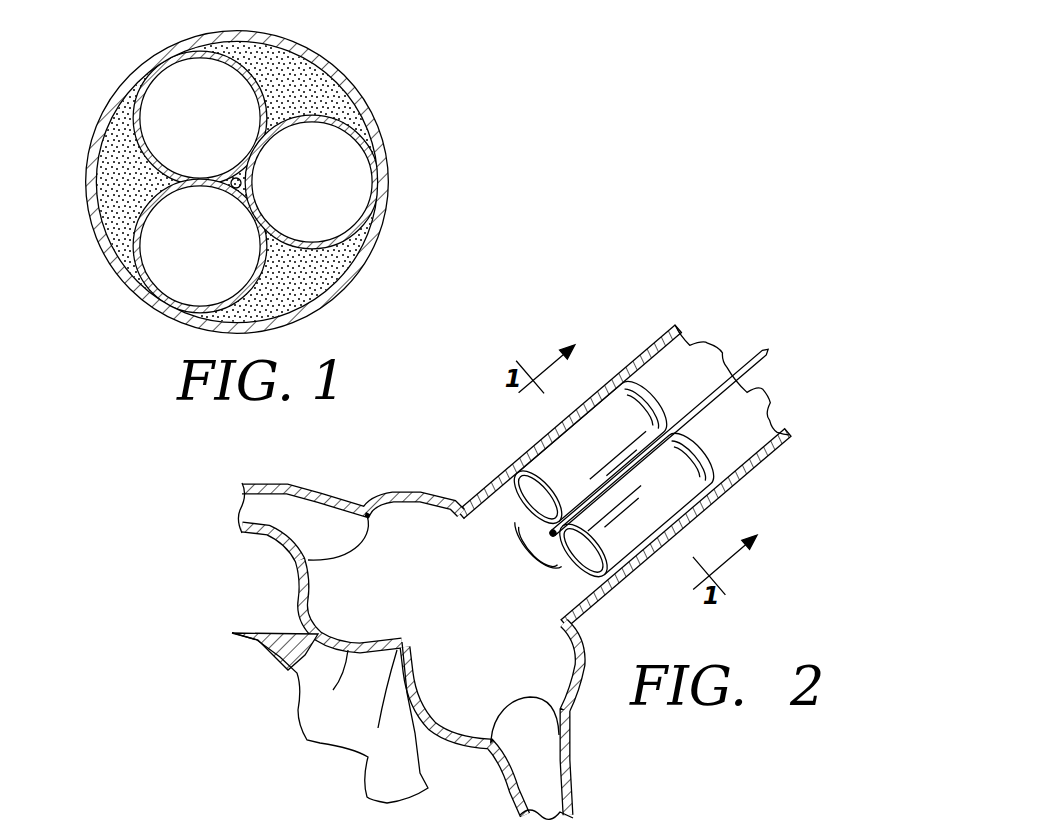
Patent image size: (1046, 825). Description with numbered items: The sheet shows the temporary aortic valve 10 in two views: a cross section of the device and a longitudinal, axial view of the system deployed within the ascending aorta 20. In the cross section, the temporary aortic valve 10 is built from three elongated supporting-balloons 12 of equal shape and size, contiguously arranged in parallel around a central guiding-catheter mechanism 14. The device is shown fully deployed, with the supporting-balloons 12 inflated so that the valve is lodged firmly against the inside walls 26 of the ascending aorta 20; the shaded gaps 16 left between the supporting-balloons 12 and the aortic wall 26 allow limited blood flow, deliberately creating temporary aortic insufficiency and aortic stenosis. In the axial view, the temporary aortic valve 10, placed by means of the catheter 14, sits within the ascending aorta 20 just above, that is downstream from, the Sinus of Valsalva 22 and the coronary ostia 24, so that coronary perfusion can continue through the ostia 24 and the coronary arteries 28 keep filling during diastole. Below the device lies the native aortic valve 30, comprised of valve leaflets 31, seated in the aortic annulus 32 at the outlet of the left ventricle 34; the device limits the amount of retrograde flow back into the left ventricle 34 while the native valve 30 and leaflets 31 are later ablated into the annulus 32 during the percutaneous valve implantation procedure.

In FIG. 1, the temporary aortic valve 10 is at (267, 170).
In FIG. 2, the temporary aortic valve 10 is at (637, 447).
In FIG. 1, the supporting-balloons 12 is at (220, 58).
In FIG. 2, the supporting-balloons 12 is at (604, 385).
In FIG. 1, the central guiding-catheter mechanism 14 is at (232, 183).
In FIG. 2, the central guiding-catheter mechanism 14 is at (770, 352).
In FIG. 1, the gaps 16 is at (298, 96).
In FIG. 2, the ascending aorta 20 is at (690, 365).
In FIG. 2, the Sinus of Valsalva 22 is at (453, 621).
In FIG. 2, the coronary ostia 24 is at (353, 545).
In FIG. 1, the inside walls of ascending aorta 26 is at (130, 88).
In FIG. 2, the inside walls of ascending aorta 26 is at (655, 345).
In FIG. 2, the coronary arteries 28 is at (302, 510).
In FIG. 2, the native aortic valve 30 is at (382, 704).
In FIG. 2, the valve leaflets 31 is at (433, 697).
In FIG. 2, the aortic annulus 32 is at (292, 620).
In FIG. 2, the left ventricle 34 is at (337, 733).